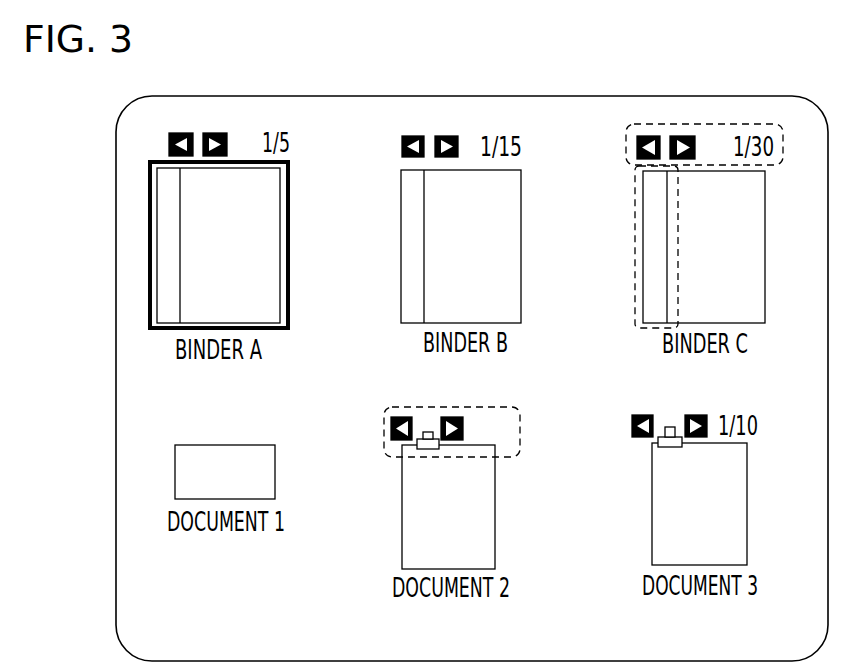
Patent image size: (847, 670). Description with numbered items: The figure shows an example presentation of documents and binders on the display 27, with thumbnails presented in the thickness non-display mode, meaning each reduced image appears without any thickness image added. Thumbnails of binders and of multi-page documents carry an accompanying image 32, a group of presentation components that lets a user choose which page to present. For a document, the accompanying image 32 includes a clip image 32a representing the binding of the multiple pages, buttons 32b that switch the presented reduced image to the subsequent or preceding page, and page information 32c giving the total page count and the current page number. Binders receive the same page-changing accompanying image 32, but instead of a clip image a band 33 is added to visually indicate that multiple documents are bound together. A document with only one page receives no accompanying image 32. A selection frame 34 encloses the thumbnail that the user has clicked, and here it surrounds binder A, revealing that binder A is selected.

The display 27 is at (338, 108).
The accompanying image 32 is at (705, 124).
The clip image 32a is at (424, 432).
The buttons 32b is at (453, 418).
The page information 32c is at (513, 408).
The band 33 is at (632, 262).
The selection frame 34 is at (146, 228).